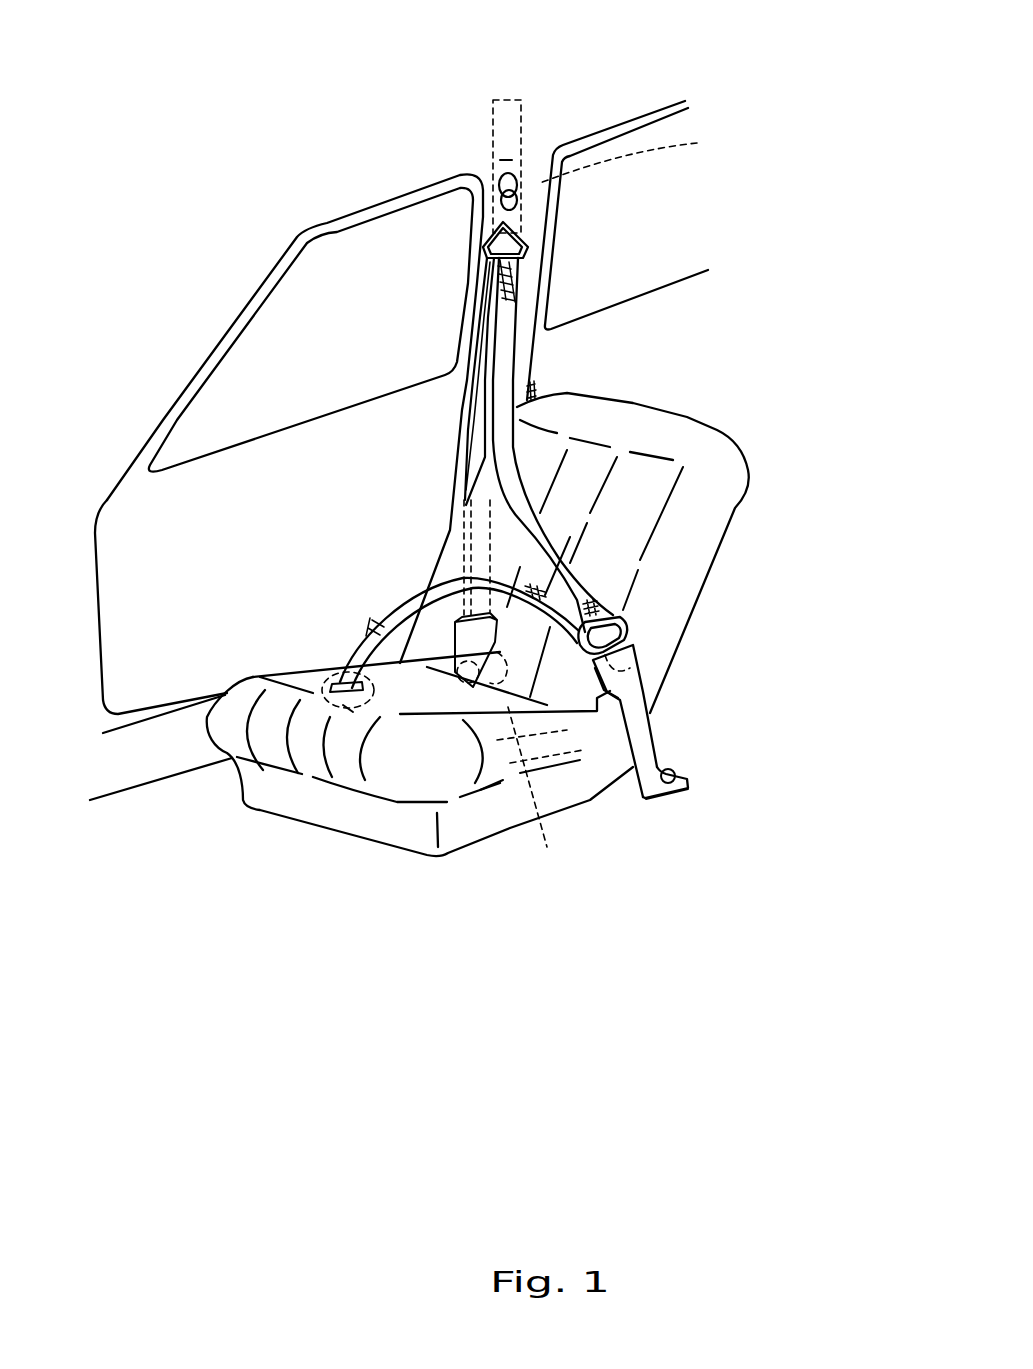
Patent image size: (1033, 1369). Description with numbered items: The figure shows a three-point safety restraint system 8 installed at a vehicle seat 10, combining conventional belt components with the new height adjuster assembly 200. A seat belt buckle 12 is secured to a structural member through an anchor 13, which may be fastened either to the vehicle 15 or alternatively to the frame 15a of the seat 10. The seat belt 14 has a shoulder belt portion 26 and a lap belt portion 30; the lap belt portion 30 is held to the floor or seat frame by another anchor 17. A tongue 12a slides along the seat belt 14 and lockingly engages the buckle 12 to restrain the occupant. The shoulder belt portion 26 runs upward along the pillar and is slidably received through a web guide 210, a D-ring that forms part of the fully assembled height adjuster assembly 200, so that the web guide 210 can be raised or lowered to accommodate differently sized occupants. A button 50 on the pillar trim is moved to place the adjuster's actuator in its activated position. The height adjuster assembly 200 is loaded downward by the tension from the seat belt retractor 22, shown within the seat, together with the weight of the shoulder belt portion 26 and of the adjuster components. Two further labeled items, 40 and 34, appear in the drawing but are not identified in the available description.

The three-point safety restraint system 8 is at (250, 155).
The height adjuster assembly 200 is at (521, 100).
The upper anchor 40 is at (503, 157).
The button 50 is at (517, 193).
The web guide 210 is at (517, 227).
The webbing hidden portion 34 is at (445, 635).
The shoulder belt portion 26 is at (510, 390).
The seat belt 14 is at (512, 430).
The seat 10 is at (278, 672).
The lap belt portion 30 is at (353, 648).
The anchor 17 is at (347, 690).
The tongue 12a is at (627, 627).
The seat belt buckle 12 is at (637, 677).
The frame of seat 15a is at (613, 787).
The vehicle 15 is at (693, 783).
The anchor 13 is at (690, 793).
The seat belt retractor 22 is at (531, 798).